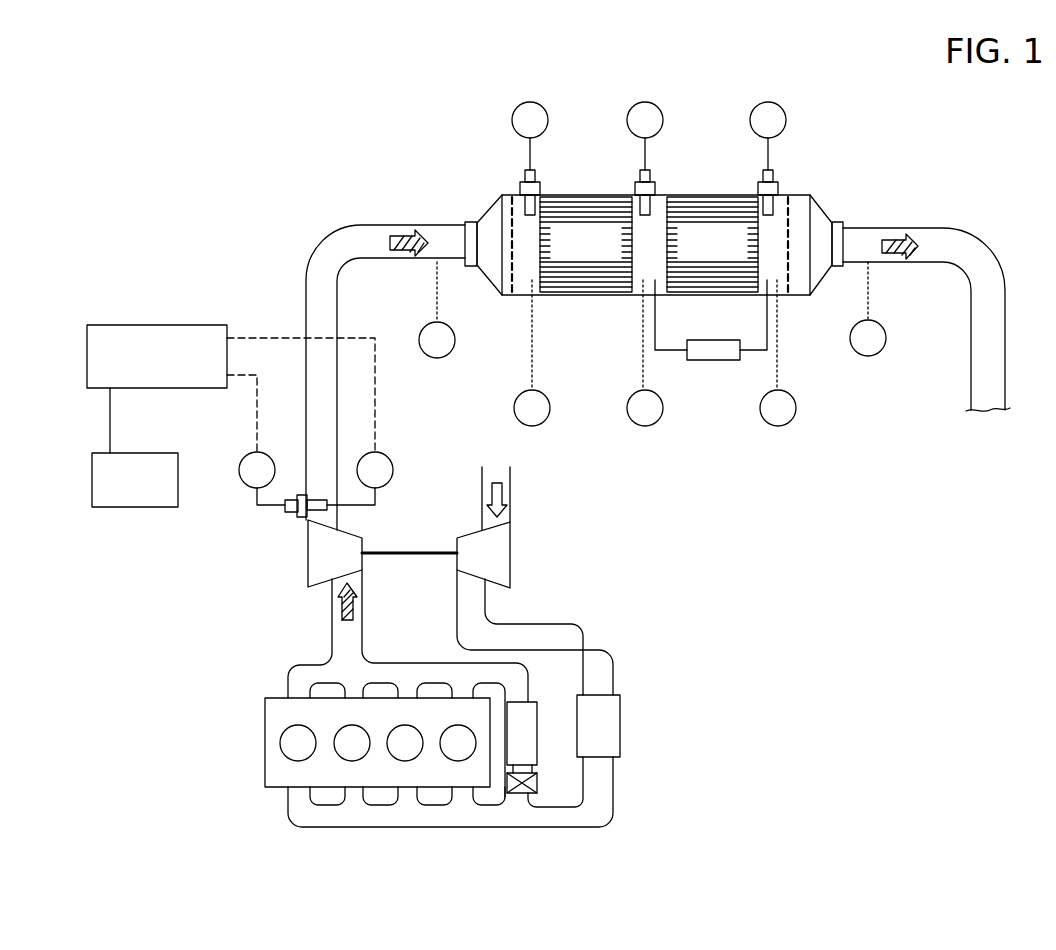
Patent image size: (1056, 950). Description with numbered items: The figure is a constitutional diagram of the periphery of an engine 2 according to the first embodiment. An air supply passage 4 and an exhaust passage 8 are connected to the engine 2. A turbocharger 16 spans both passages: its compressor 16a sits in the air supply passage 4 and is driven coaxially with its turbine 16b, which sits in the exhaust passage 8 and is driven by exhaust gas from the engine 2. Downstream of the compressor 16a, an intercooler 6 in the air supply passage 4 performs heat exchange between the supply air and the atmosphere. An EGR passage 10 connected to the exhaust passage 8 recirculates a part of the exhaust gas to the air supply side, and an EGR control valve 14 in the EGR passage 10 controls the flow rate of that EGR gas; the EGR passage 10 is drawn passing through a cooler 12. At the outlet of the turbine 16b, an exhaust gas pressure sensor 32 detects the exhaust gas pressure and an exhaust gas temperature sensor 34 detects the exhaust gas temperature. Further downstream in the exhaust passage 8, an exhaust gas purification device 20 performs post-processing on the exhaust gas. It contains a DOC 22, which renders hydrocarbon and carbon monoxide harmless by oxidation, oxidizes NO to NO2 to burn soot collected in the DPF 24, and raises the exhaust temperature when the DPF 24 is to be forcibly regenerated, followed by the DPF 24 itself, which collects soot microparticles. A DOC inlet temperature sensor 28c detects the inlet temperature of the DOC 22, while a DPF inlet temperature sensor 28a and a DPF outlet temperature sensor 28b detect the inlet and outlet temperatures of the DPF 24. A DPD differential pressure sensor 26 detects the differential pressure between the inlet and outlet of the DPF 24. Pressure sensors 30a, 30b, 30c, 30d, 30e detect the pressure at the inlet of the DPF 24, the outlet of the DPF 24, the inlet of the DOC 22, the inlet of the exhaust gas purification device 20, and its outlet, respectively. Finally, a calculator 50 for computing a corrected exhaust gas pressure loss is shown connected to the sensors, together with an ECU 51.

The engine 2 is at (265, 718).
The air supply passage 4 is at (603, 793).
The intercooler 6 is at (620, 703).
The exhaust passage 8 is at (332, 253).
The EGR passage 10 is at (517, 673).
The EGR cooler 12 is at (537, 712).
The EGR control valve 14 is at (520, 793).
The turbocharger 16 is at (402, 530).
The compressor 16a is at (507, 550).
The turbine 16b is at (308, 560).
The exhaust gas purification device 20 is at (822, 175).
The DOC (oxidation catalyst) 22 is at (567, 227).
The DPF 24 is at (690, 227).
The DPD differential pressure sensor 26 is at (703, 360).
The DPF inlet temperature sensor 28a is at (660, 110).
The DPF outlet temperature sensor 28b is at (783, 110).
The DOC inlet temperature sensor 28c is at (545, 110).
The pressure sensor 30a is at (645, 426).
The pressure sensor 30b is at (796, 408).
The pressure sensor 30c is at (550, 408).
The pressure sensor 30d is at (455, 340).
The pressure sensor 30e is at (886, 338).
The exhaust gas pressure sensor 32 is at (385, 452).
The exhaust gas temperature sensor 34 is at (239, 478).
The calculator 50 is at (140, 325).
The ECU (Electronic Control Unit) 51 is at (142, 453).